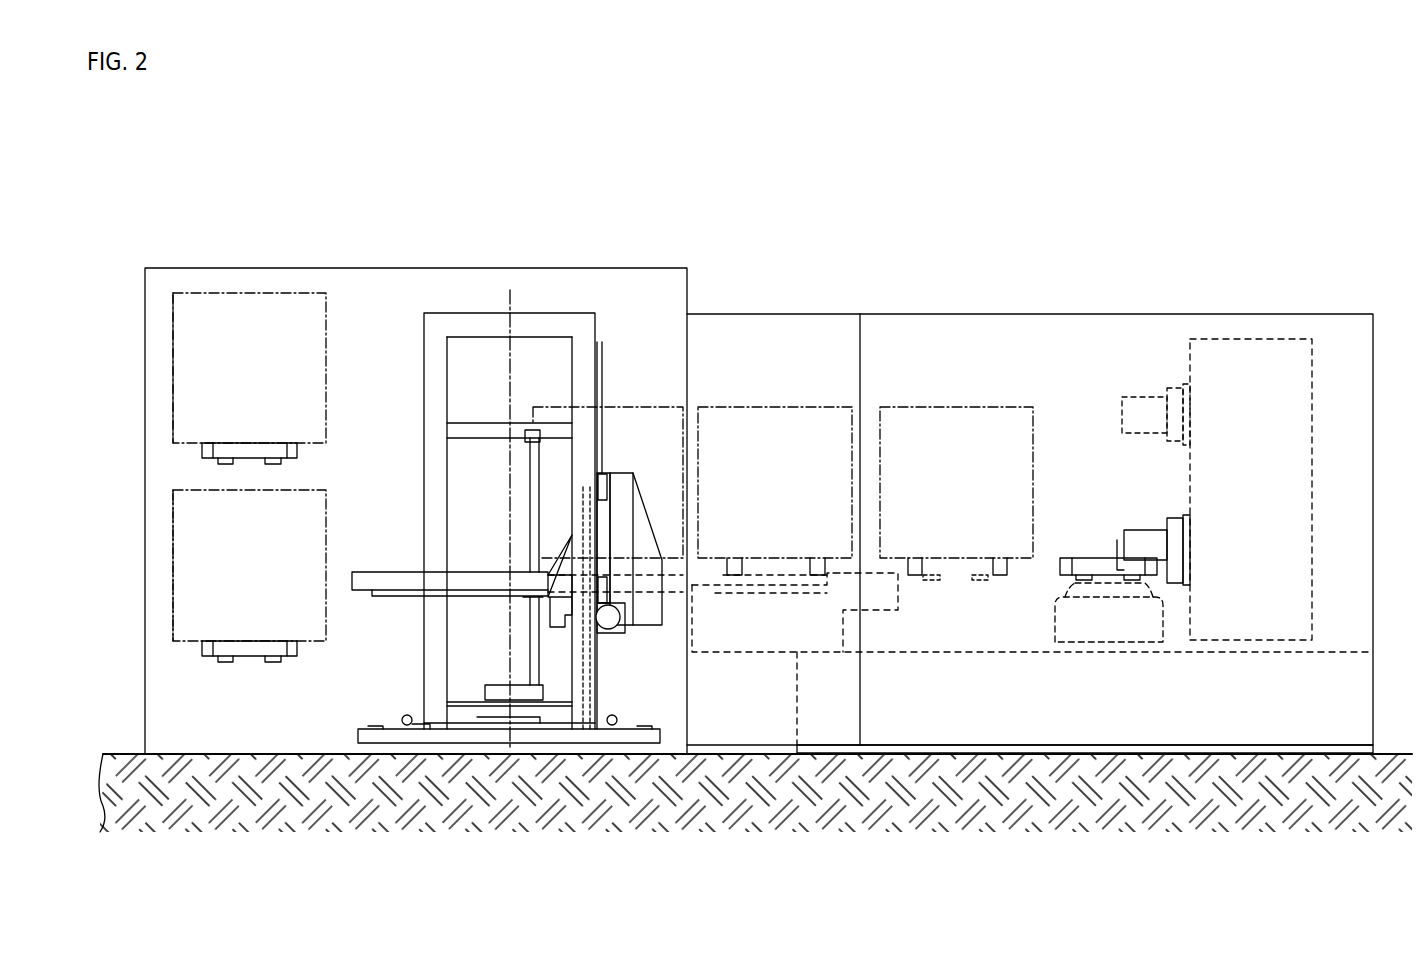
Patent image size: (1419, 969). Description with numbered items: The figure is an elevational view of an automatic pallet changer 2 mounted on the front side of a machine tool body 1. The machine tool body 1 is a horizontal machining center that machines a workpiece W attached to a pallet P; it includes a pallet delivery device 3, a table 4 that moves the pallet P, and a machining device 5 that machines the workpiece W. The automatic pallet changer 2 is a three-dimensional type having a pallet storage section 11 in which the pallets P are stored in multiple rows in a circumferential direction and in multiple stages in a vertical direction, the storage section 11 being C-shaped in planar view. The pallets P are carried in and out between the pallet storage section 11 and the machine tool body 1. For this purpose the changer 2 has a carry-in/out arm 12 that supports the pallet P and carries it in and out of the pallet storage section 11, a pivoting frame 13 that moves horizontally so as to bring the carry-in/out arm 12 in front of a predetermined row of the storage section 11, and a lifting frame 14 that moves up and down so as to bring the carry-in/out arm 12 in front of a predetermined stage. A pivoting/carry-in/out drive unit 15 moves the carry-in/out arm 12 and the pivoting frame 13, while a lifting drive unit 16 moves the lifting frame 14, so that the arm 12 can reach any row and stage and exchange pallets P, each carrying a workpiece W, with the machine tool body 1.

The machine tool body 1 is at (1185, 290).
The automatic pallet changer 2 is at (640, 238).
The pallet delivery device 3 is at (747, 652).
The table 4 is at (1113, 645).
The machining device 5 is at (1140, 395).
The pallet storage section 11 is at (245, 270).
The carry-in/out arm 12 is at (377, 574).
The pivoting frame 13 is at (435, 667).
The lifting frame 14 is at (620, 480).
The pivoting/carry-in/out drive unit 15 is at (525, 680).
The lifting drive unit 16 is at (612, 633).
The workpiece W is at (173, 368).
The pallet P is at (200, 458).